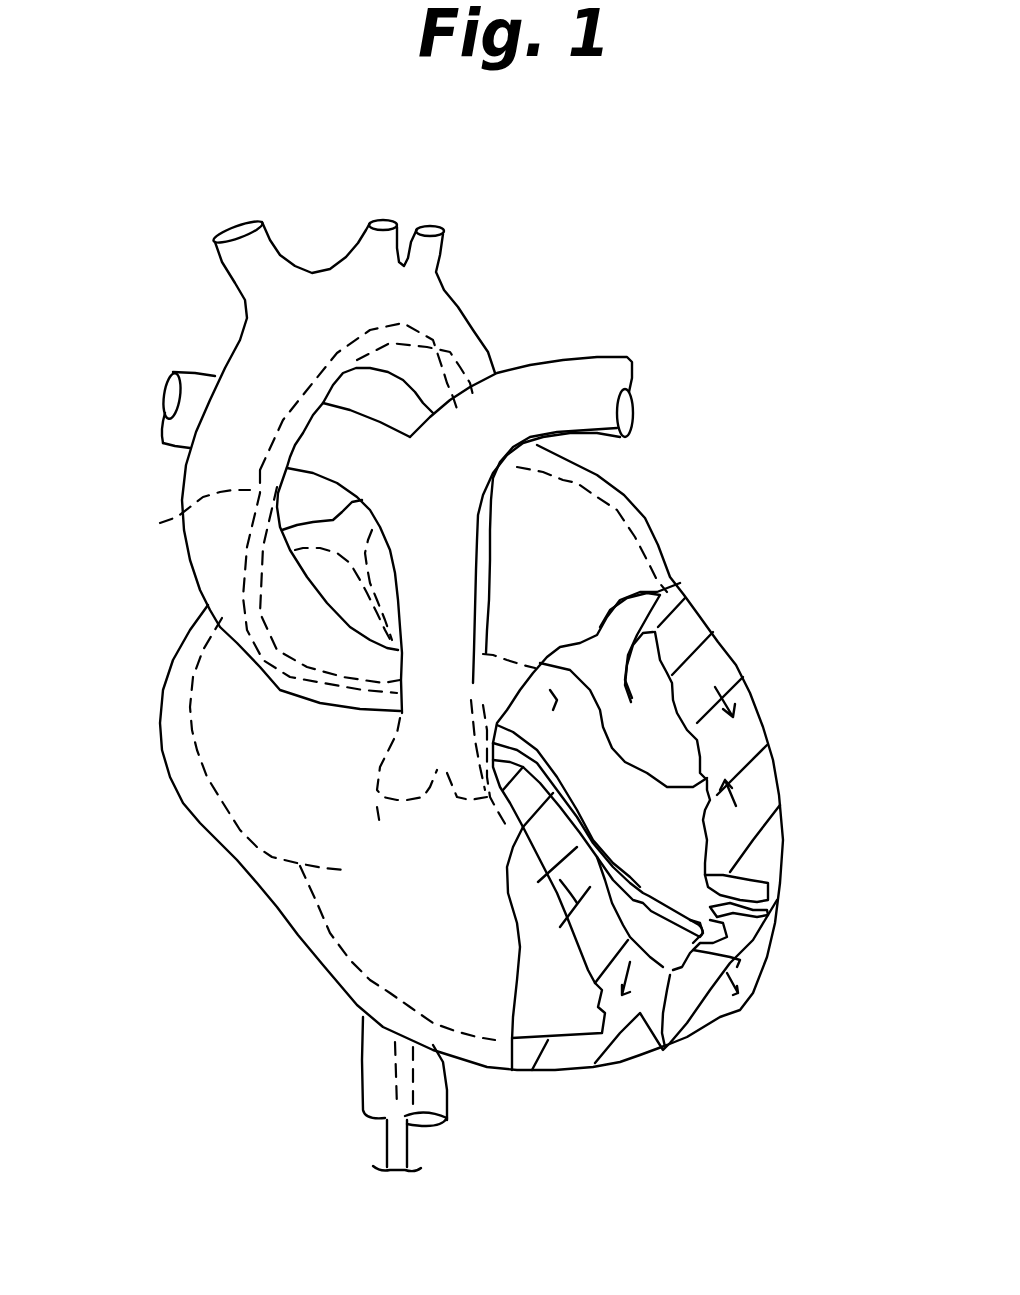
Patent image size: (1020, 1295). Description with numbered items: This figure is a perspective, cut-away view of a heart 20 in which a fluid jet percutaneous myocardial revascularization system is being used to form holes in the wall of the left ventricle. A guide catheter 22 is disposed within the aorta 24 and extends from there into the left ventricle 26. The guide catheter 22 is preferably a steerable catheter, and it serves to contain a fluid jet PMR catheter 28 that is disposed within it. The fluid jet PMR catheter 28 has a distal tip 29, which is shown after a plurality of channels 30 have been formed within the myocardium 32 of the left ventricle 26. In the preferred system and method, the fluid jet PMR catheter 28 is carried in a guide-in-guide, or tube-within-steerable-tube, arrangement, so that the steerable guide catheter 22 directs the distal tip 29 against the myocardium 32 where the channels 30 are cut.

The heart 20 is at (625, 307).
The guide catheter 22 is at (147, 530).
The aorta 24 is at (450, 297).
The left ventricle 26 is at (707, 778).
The fluid jet PMR catheter 28 is at (633, 873).
The distal tip 29 is at (663, 1047).
The channels 30 is at (743, 878).
The myocardium 32 is at (692, 638).